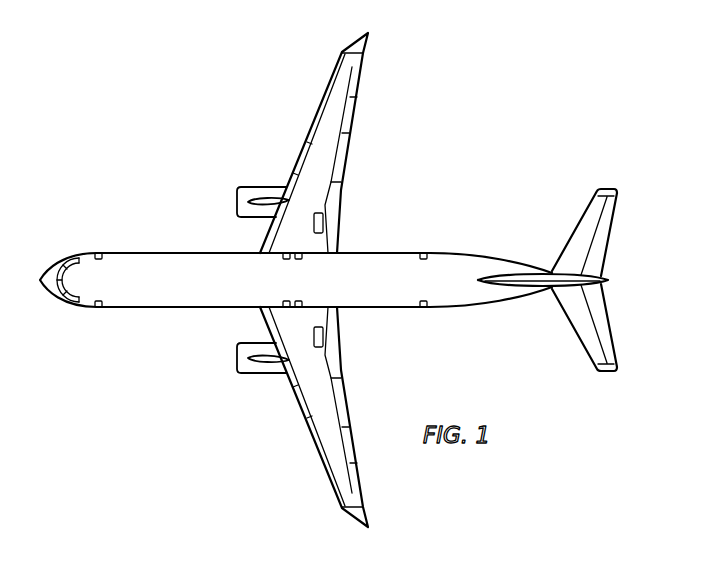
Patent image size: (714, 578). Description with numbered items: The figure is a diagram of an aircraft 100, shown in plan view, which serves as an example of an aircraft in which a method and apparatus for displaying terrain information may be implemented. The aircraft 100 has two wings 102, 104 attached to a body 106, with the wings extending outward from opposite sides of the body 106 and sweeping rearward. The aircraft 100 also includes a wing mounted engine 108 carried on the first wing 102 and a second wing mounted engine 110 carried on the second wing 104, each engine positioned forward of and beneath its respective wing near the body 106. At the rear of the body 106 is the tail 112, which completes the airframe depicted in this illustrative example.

The aircraft 100 is at (473, 144).
The wing 102 is at (303, 148).
The wing 104 is at (301, 407).
The body 106 is at (148, 252).
The wing mounted engine 108 is at (237, 200).
The wing mounted engine 110 is at (237, 360).
The tail 112 is at (609, 235).